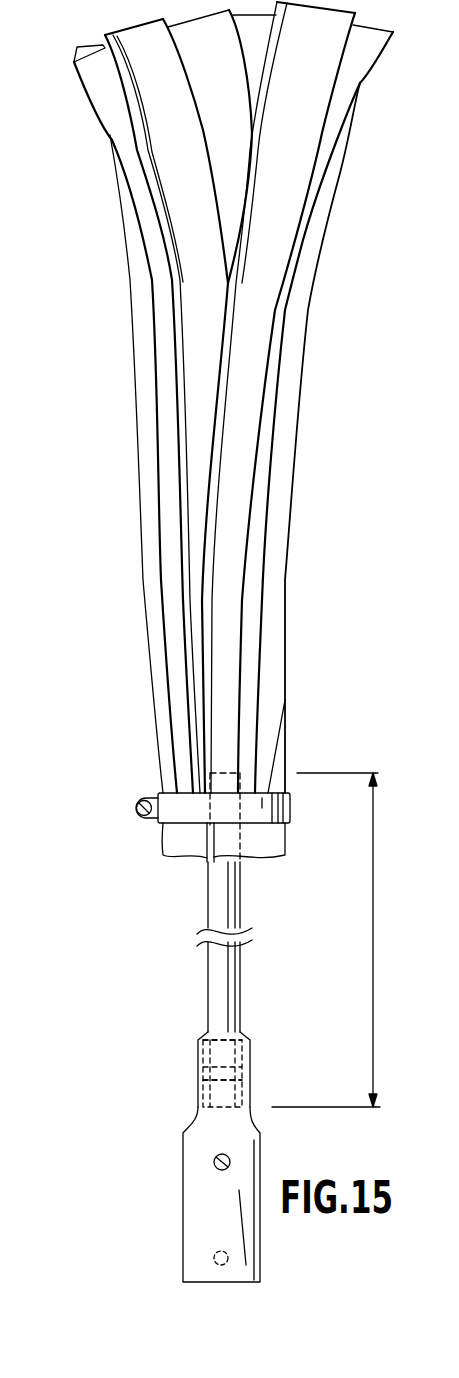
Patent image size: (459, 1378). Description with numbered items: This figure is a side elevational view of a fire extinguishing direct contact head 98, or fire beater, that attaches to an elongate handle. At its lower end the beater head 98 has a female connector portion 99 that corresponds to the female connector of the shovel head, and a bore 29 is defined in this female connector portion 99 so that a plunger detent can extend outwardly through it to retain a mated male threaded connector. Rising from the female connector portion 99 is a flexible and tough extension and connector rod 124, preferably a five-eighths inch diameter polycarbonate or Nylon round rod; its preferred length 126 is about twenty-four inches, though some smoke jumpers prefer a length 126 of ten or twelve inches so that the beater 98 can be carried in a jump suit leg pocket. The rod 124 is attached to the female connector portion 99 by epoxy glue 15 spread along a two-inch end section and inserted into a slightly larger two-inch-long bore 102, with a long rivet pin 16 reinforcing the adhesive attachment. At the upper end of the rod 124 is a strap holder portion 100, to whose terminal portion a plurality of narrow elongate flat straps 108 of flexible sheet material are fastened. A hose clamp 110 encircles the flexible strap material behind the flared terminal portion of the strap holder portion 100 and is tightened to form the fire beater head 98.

The flat straps 108 is at (182, 218).
The fire extinguishing direct contact head 98 is at (323, 671).
The hose clamp 110 is at (290, 810).
The strap holder portion 100 is at (184, 862).
The extension and connector rod 124 is at (242, 902).
The length of rod 126 is at (376, 928).
The bore 102 is at (220, 1065).
The epoxy glue 15 is at (192, 1048).
The rivet pin 16 is at (198, 1077).
The female connector portion 99 is at (182, 1228).
The bore 29 is at (213, 1162).